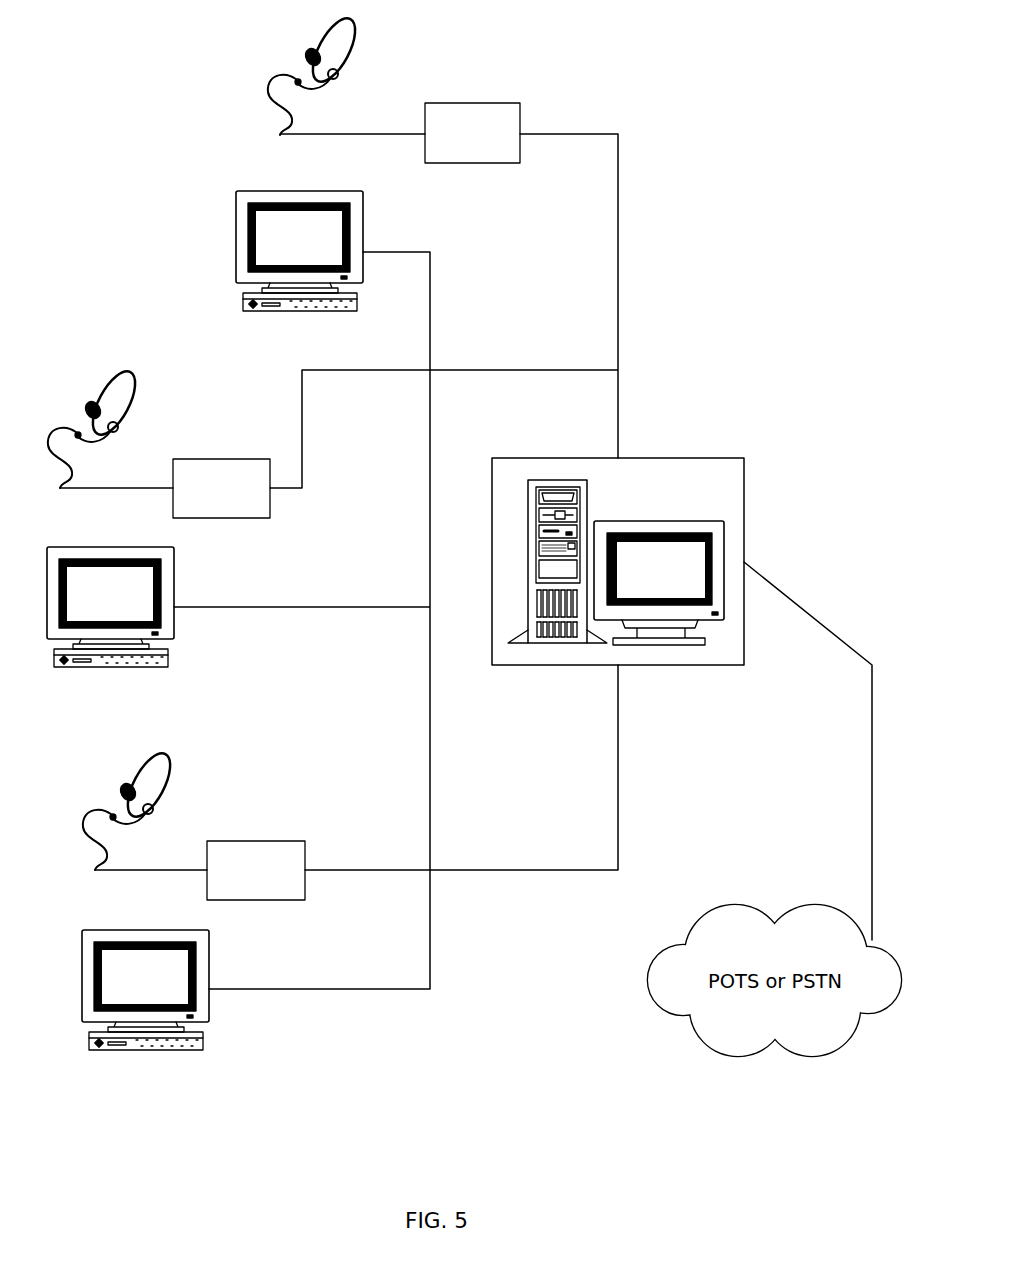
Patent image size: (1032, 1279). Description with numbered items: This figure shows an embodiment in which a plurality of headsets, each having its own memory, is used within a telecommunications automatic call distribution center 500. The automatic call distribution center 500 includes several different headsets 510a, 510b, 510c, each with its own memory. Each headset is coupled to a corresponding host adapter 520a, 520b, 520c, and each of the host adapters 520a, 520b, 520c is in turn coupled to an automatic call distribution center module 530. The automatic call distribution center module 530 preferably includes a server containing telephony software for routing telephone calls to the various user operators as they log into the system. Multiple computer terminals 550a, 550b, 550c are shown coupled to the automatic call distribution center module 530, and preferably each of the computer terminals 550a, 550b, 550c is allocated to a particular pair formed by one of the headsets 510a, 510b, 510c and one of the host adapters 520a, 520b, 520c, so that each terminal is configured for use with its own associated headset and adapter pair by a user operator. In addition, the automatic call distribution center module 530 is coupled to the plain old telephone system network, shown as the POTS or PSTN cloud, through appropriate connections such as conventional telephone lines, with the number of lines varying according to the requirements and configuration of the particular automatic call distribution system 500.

The automatic call distribution center 500 is at (781, 134).
The headset 510a is at (329, 73).
The headset 510b is at (120, 426).
The headset 510c is at (146, 808).
The host adapter 520a is at (472, 133).
The host adapter 520b is at (221, 488).
The host adapter 520c is at (256, 870).
The automatic call distribution center module 530 is at (727, 490).
The computer terminal 550a is at (299, 264).
The computer terminal 550b is at (110, 619).
The computer terminal 550c is at (145, 1002).